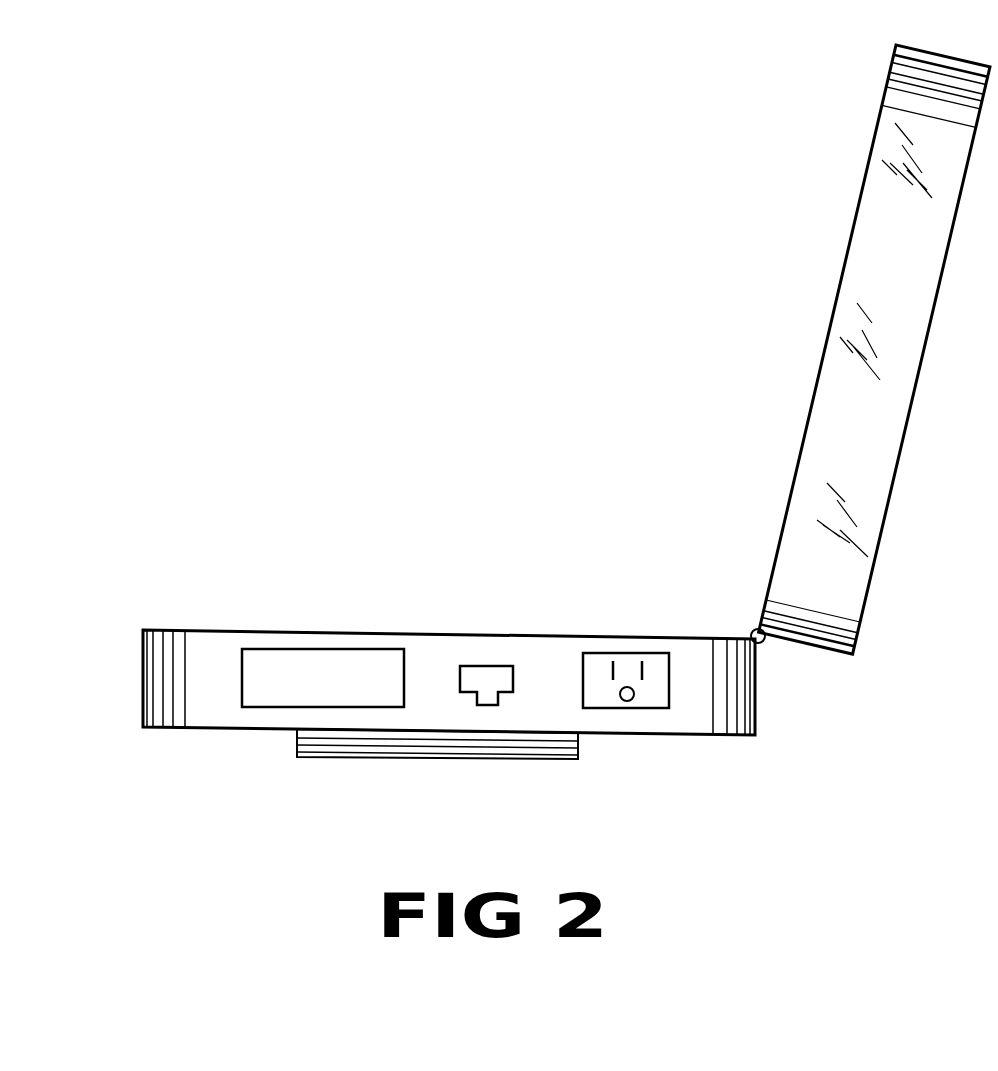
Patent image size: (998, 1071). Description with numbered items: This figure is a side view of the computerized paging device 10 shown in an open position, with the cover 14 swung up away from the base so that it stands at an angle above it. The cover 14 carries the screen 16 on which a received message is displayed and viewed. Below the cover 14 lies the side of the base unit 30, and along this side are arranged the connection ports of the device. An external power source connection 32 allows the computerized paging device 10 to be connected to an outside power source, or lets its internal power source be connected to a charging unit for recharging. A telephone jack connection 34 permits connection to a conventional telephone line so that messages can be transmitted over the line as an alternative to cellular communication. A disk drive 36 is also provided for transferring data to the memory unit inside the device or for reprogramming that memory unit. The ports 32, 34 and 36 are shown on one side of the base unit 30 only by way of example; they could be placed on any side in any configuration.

The computer paging device 10 is at (553, 362).
The cover 14 is at (925, 277).
The screen 16 is at (528, 732).
The side of base unit 30 is at (208, 717).
The external power source connection 32 is at (653, 699).
The telephone jack connection 34 is at (505, 683).
The disk drive 36 is at (352, 705).